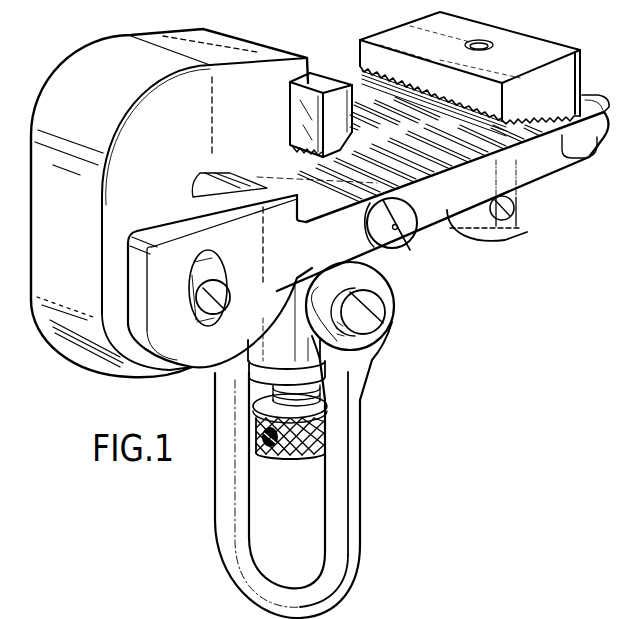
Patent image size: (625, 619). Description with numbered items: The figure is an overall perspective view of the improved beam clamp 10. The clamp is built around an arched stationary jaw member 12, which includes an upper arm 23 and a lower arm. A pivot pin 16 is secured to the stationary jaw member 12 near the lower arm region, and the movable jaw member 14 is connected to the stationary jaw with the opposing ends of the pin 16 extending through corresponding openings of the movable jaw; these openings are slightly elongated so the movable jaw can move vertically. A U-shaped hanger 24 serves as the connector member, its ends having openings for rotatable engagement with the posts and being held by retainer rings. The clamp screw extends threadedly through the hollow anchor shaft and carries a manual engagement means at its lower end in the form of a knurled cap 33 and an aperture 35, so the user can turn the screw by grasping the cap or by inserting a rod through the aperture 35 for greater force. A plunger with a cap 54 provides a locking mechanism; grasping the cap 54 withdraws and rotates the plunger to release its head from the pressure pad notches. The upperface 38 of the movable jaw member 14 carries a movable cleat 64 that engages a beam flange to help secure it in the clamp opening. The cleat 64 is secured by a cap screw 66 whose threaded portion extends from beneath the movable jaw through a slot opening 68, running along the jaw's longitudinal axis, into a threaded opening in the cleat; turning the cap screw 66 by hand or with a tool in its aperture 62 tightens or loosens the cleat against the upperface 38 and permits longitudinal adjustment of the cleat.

The beam clamp 10 is at (404, 307).
The stationary jaw member 12 is at (78, 318).
The movable jaw member 14 is at (523, 168).
The pivot pin 16 is at (215, 303).
The upper arm 23 is at (260, 75).
The U-shaped hanger 24 is at (360, 483).
The knurled cap 33 is at (292, 448).
The aperture 35 is at (268, 450).
The upperface 38 is at (530, 130).
The cap 54 is at (398, 238).
The aperture 62 is at (513, 209).
The movable cleat 64 is at (533, 43).
The cap screw 66 is at (466, 236).
The slot opening 68 is at (393, 128).